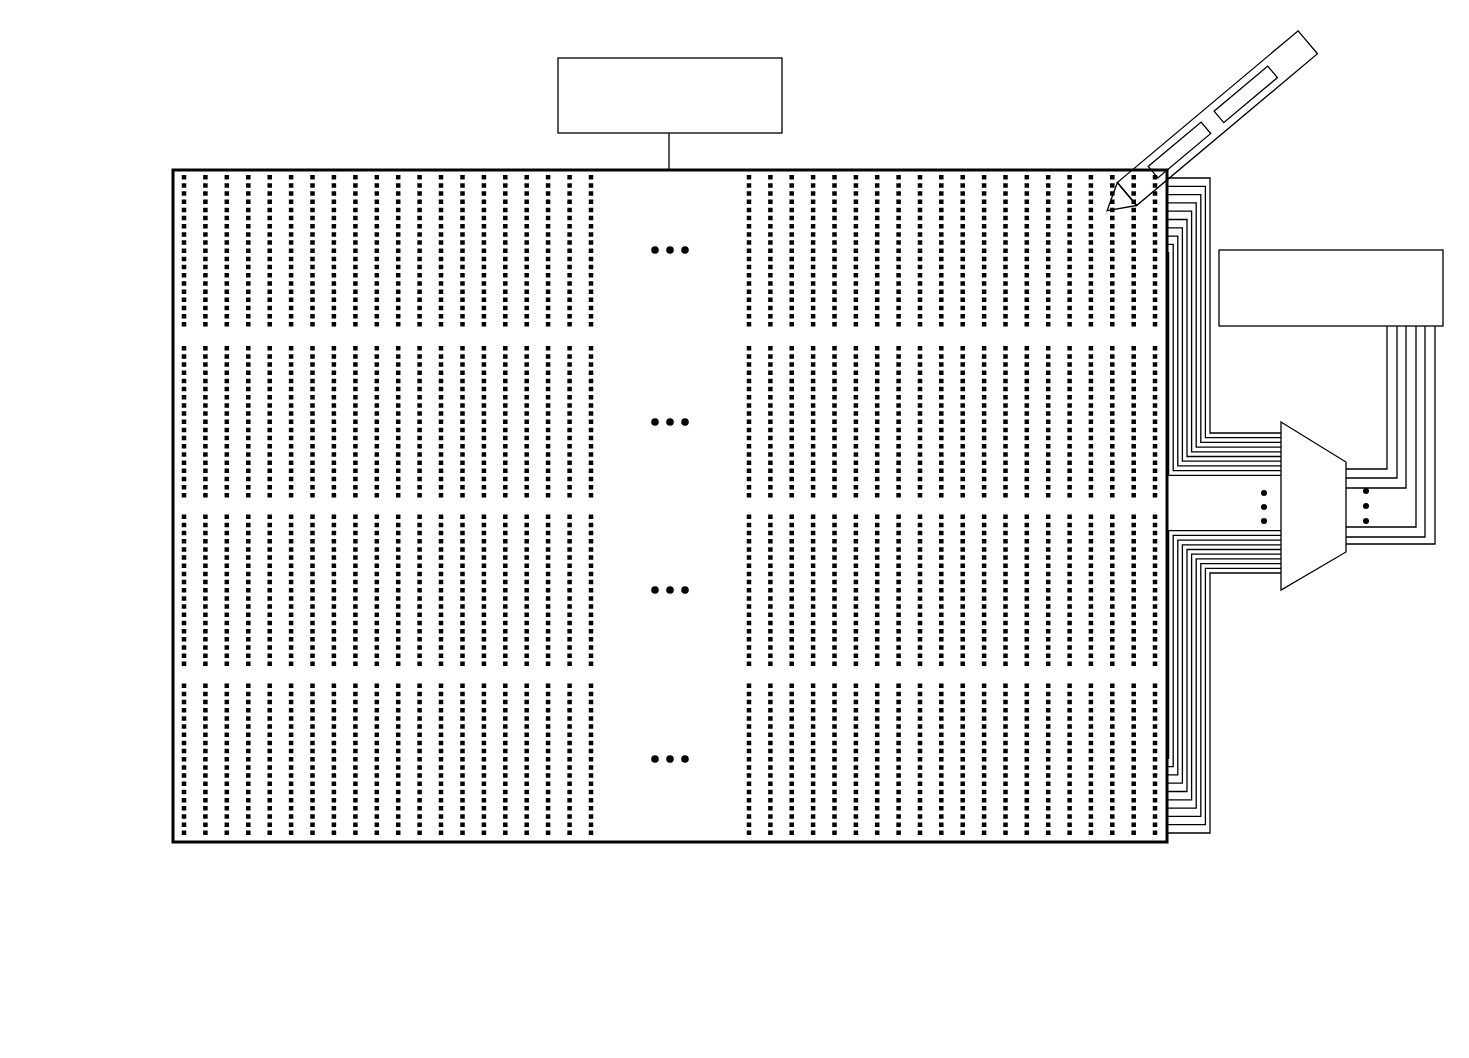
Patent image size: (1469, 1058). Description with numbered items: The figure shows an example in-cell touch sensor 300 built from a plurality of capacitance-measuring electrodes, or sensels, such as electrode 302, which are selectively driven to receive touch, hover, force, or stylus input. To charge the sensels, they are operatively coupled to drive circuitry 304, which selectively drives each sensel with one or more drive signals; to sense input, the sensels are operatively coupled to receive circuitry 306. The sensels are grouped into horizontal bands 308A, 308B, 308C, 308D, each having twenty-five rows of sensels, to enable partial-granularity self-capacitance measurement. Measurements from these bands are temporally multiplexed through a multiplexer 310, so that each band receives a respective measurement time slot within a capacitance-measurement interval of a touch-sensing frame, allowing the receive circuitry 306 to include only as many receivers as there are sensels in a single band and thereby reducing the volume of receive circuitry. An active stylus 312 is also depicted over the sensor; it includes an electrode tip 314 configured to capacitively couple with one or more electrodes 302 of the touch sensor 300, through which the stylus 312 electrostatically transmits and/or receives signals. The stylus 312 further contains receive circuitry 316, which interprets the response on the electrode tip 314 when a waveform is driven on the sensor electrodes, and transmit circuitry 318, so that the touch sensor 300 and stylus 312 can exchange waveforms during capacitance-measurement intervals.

The touch sensor 300 is at (937, 72).
The electrode 302 is at (291, 176).
The drive circuitry 304 is at (653, 120).
The receive circuitry 306 is at (1315, 312).
The horizontal band 308A is at (170, 172).
The horizontal band 308B is at (170, 338).
The horizontal band 308C is at (170, 508).
The horizontal band 308D is at (170, 678).
The multiplexer 310 is at (1297, 529).
The active stylus 312 is at (1213, 121).
The electrode tip 314 is at (1116, 203).
The receive circuitry 316 is at (1179, 150).
The transmit circuitry 318 is at (1245, 94).